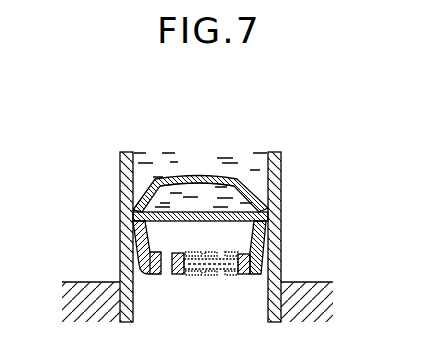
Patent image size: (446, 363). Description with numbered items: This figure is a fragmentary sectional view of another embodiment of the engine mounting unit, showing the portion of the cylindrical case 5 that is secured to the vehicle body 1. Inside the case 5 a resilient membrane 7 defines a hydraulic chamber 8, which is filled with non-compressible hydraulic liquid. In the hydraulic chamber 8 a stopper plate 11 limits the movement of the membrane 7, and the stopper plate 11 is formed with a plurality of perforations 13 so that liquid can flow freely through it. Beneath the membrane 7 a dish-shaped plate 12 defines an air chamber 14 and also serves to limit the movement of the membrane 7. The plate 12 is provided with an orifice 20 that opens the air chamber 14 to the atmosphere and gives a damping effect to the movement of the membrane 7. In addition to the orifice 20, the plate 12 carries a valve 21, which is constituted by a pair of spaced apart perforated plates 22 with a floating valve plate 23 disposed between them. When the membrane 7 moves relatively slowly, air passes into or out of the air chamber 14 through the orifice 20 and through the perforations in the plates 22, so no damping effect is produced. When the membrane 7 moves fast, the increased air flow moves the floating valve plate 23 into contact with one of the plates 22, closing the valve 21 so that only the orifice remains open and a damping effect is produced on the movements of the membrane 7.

The vehicle body 1 is at (317, 305).
The cylindrical case 5 is at (276, 181).
The resilient membrane 7 is at (268, 214).
The hydraulic chamber 8 is at (147, 162).
The stopper plate 11 is at (163, 178).
The perforations 13 is at (217, 177).
The dish-shaped plate 12 is at (250, 282).
The air chamber 14 is at (258, 250).
The orifice 20 is at (165, 276).
The valve 21 is at (177, 283).
The perforated plates 22 is at (250, 248).
The floating valve plate 23 is at (203, 275).